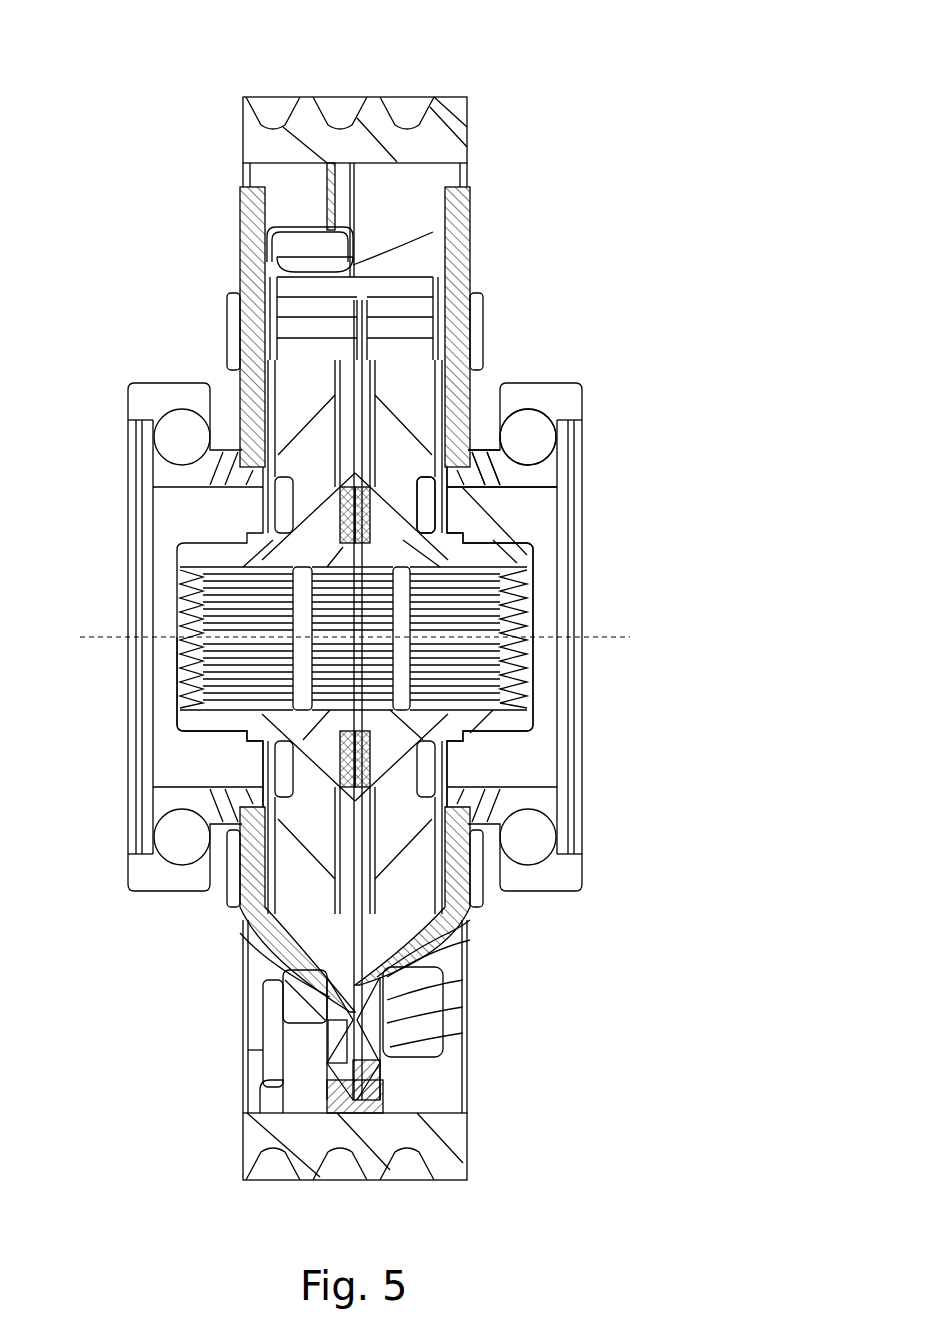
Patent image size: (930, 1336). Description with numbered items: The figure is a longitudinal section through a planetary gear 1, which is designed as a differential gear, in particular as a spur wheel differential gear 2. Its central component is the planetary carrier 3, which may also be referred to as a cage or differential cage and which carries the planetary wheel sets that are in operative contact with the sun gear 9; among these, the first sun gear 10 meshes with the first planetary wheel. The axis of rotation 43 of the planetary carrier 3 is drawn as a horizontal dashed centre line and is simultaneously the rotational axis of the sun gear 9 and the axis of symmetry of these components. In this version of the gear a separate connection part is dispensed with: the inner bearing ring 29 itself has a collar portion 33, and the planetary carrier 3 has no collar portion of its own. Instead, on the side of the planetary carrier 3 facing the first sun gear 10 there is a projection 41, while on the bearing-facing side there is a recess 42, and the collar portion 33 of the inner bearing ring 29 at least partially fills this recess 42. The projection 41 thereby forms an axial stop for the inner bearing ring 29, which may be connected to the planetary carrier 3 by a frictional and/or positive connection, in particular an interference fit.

The planetary gear 1 is at (357, 593).
The spur wheel differential gear 2 is at (407, 92).
The planetary carrier 3 is at (253, 203).
The sun gear 9 is at (443, 300).
The first sun gear 10 is at (440, 373).
The inner bearing ring 29 is at (547, 473).
The collar portion 33 is at (503, 452).
The projection 41 is at (463, 493).
The recess 42 is at (455, 503).
The axis of rotation 43 is at (603, 640).